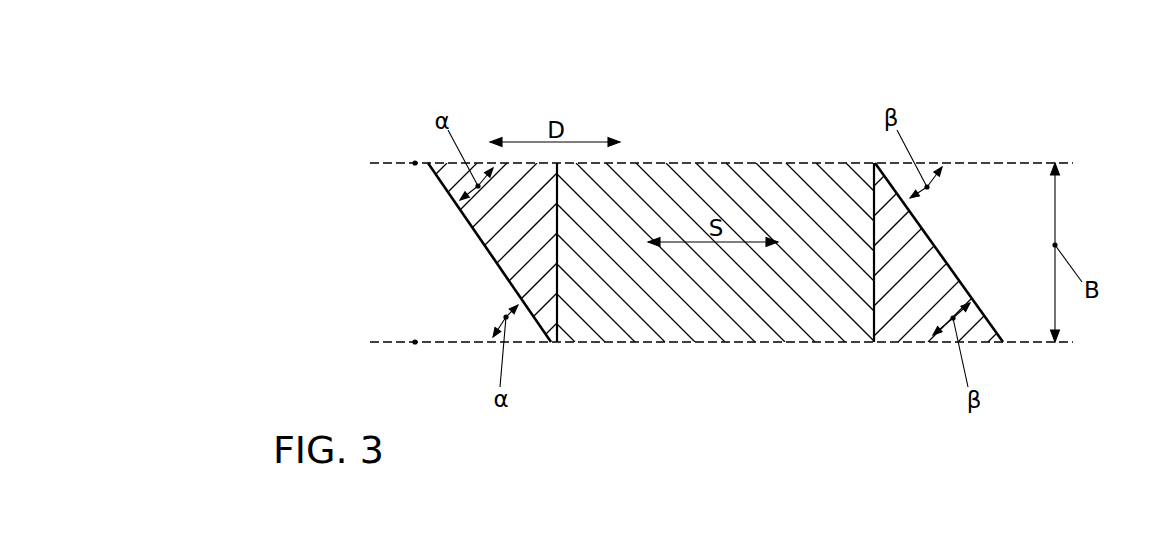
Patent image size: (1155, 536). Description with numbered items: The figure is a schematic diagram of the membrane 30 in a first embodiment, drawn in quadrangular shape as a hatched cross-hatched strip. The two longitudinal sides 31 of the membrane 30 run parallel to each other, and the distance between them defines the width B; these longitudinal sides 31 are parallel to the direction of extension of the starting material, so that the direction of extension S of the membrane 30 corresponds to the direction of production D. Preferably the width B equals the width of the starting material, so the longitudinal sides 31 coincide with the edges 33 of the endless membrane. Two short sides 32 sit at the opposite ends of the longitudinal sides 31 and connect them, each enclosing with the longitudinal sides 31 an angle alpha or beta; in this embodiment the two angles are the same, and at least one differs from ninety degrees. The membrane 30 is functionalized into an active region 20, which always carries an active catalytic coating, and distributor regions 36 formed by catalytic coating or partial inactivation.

The active region 20 is at (743, 295).
The membrane 30 is at (745, 121).
The longitudinal sides 31 is at (657, 157).
The short sides 32 is at (482, 262).
The edges 33 is at (415, 163).
The distributor region 36 is at (545, 294).